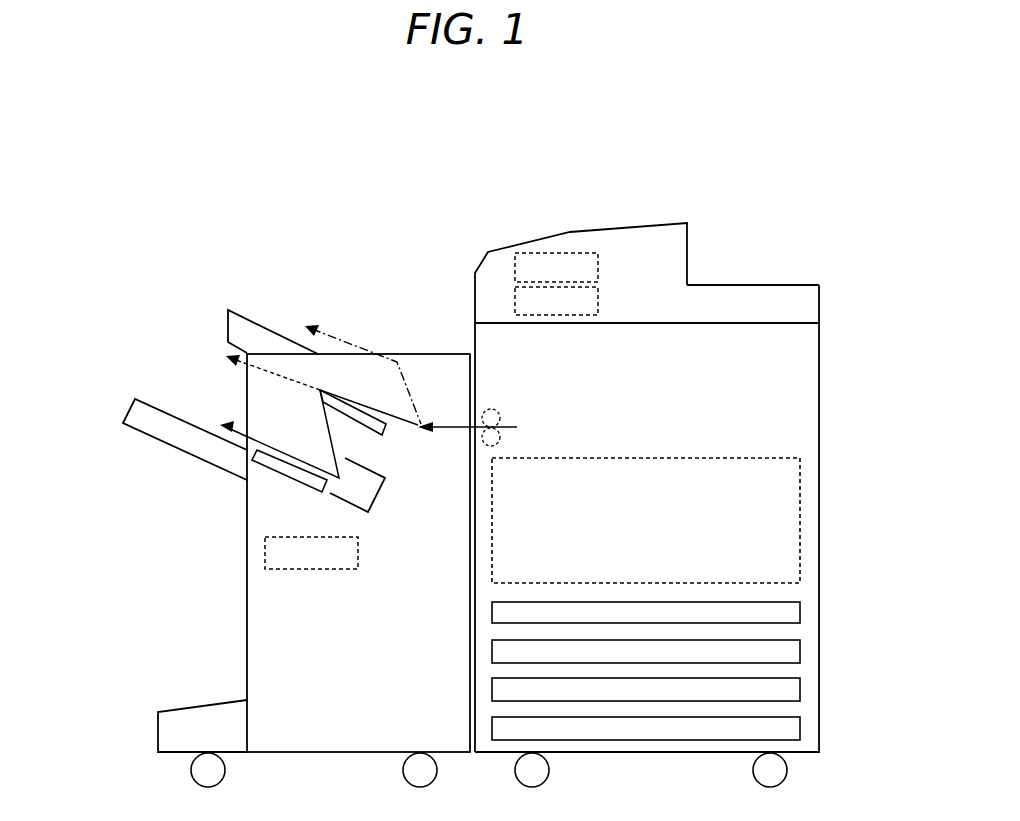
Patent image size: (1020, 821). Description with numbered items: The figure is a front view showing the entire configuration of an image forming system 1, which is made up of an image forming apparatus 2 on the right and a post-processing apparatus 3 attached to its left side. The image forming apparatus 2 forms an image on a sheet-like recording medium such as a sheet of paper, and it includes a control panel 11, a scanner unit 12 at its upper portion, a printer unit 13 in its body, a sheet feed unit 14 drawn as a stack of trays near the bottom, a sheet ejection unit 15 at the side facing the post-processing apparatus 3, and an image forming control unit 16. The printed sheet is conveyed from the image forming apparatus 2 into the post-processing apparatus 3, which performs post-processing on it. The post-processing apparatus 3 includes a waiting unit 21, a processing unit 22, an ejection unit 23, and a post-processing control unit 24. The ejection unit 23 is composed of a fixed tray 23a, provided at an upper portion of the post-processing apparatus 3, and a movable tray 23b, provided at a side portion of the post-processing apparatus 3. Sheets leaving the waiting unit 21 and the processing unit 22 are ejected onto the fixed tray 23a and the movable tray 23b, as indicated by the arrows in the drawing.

The image forming system 1 is at (583, 160).
The image forming apparatus 2 is at (788, 212).
The post-processing apparatus 3 is at (303, 264).
The control panel 11 is at (598, 268).
The scanner unit 12 is at (736, 274).
The printer unit 13 is at (800, 518).
The sheet feed unit 14 is at (800, 612).
The sheet ejection unit 15 is at (498, 410).
The image forming control unit 16 is at (598, 300).
The waiting unit 21 is at (388, 430).
The processing unit 22 is at (382, 497).
The ejection unit 23 is at (122, 344).
The fixed tray 23a is at (227, 328).
The movable tray 23b is at (127, 410).
The post-processing control unit 24 is at (358, 552).